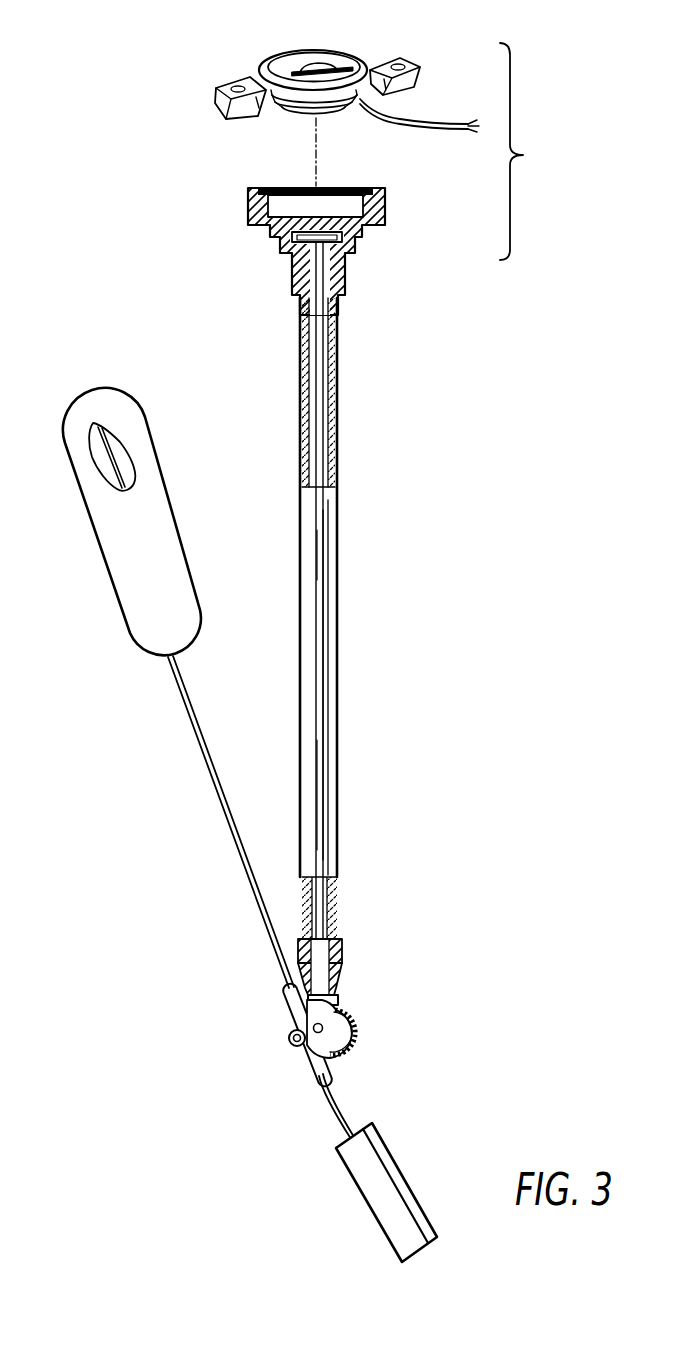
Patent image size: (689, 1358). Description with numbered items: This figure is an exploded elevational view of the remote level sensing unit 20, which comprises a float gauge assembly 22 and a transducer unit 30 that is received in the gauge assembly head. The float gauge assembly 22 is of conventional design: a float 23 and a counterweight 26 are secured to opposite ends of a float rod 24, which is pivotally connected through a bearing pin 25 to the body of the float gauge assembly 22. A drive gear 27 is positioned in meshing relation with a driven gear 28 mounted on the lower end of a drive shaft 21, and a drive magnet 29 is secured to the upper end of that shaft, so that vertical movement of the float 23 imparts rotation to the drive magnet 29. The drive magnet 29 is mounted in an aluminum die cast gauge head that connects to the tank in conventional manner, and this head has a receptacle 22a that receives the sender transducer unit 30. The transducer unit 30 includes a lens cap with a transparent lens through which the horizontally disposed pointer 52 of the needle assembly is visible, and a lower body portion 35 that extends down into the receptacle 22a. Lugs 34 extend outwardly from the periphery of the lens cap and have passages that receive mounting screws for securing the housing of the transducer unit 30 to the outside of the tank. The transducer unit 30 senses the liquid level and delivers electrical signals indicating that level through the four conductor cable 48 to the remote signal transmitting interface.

The remote level sensing unit 20 is at (443, 151).
The drive shaft 21 is at (317, 930).
The float gauge assembly 22 is at (337, 392).
The receptacle 22a is at (357, 205).
The float 23 is at (102, 505).
The float rod 24 is at (204, 745).
The bearing pin 25 is at (331, 1044).
The counterweight 26 is at (365, 1185).
The drive gear 27 is at (352, 1030).
The driven gear 28 is at (339, 998).
The drive magnet 29 is at (284, 247).
The transducer unit 30 is at (280, 55).
The lugs 34 is at (216, 93).
The body portion 35 is at (293, 116).
The four conductor cable 48 is at (403, 117).
The pointer 52 is at (324, 68).